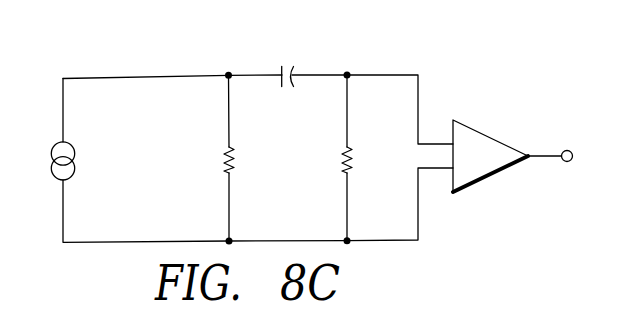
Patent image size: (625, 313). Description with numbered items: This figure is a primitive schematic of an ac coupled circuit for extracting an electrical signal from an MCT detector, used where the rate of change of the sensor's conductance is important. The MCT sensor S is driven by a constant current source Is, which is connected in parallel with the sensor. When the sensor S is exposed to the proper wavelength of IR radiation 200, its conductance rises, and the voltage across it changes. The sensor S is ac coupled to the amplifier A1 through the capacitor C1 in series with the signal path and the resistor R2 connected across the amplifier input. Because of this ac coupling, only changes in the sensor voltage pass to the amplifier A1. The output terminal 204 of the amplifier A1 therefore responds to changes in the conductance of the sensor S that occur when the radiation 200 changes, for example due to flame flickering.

The IR radiation 200 is at (193, 158).
The output terminal 204 is at (568, 150).
The constant current source Is is at (49, 161).
The capacitor C1 is at (288, 60).
The MCT sensor S is at (238, 158).
The resistor R2 is at (363, 158).
The amplifier A1 is at (490, 156).